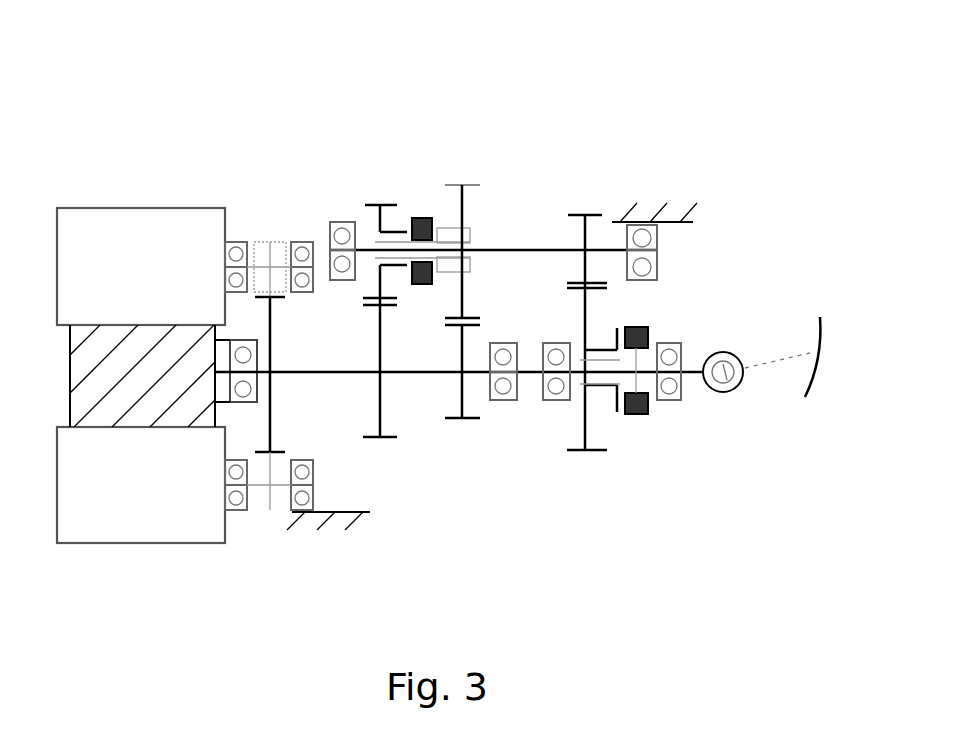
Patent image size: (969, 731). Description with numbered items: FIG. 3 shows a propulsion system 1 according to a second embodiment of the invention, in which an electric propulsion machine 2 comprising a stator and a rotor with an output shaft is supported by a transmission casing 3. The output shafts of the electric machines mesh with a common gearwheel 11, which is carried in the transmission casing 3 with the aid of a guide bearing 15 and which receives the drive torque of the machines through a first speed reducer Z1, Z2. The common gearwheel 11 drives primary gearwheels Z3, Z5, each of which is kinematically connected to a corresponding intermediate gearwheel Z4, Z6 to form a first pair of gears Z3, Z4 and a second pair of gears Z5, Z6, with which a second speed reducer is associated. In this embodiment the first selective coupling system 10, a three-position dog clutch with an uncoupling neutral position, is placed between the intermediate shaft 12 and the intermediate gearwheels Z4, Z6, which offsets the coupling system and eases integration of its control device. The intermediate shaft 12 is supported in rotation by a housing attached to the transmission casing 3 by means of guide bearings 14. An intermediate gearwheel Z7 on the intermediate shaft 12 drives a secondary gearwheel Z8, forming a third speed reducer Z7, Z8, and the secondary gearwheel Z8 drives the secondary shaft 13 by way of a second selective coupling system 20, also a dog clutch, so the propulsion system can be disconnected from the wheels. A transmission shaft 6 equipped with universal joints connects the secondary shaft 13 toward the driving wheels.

The propulsion system 1 is at (152, 168).
The electric propulsion machine 2 is at (173, 247).
The transmission casing 3 is at (198, 337).
The transmission shaft 6 is at (783, 353).
The first selective coupling system 10 is at (421, 284).
The common gearwheel 11 is at (315, 372).
The intermediate shaft 12 is at (503, 250).
The secondary shaft 13 is at (690, 372).
The guide bearing 14 is at (640, 225).
The guide bearing 15 is at (243, 383).
The second selective coupling system 20 is at (635, 415).
The first speed reducer gear Z1 is at (269, 276).
The first speed reducer gear Z2 is at (297, 451).
The primary gearwheel Z3 is at (388, 394).
The intermediate gearwheel Z4 is at (416, 226).
The primary gearwheel Z5 is at (462, 404).
The intermediate gearwheel Z6 is at (457, 236).
The intermediate gearwheel Z7 is at (583, 217).
The secondary gearwheel Z8 is at (587, 386).